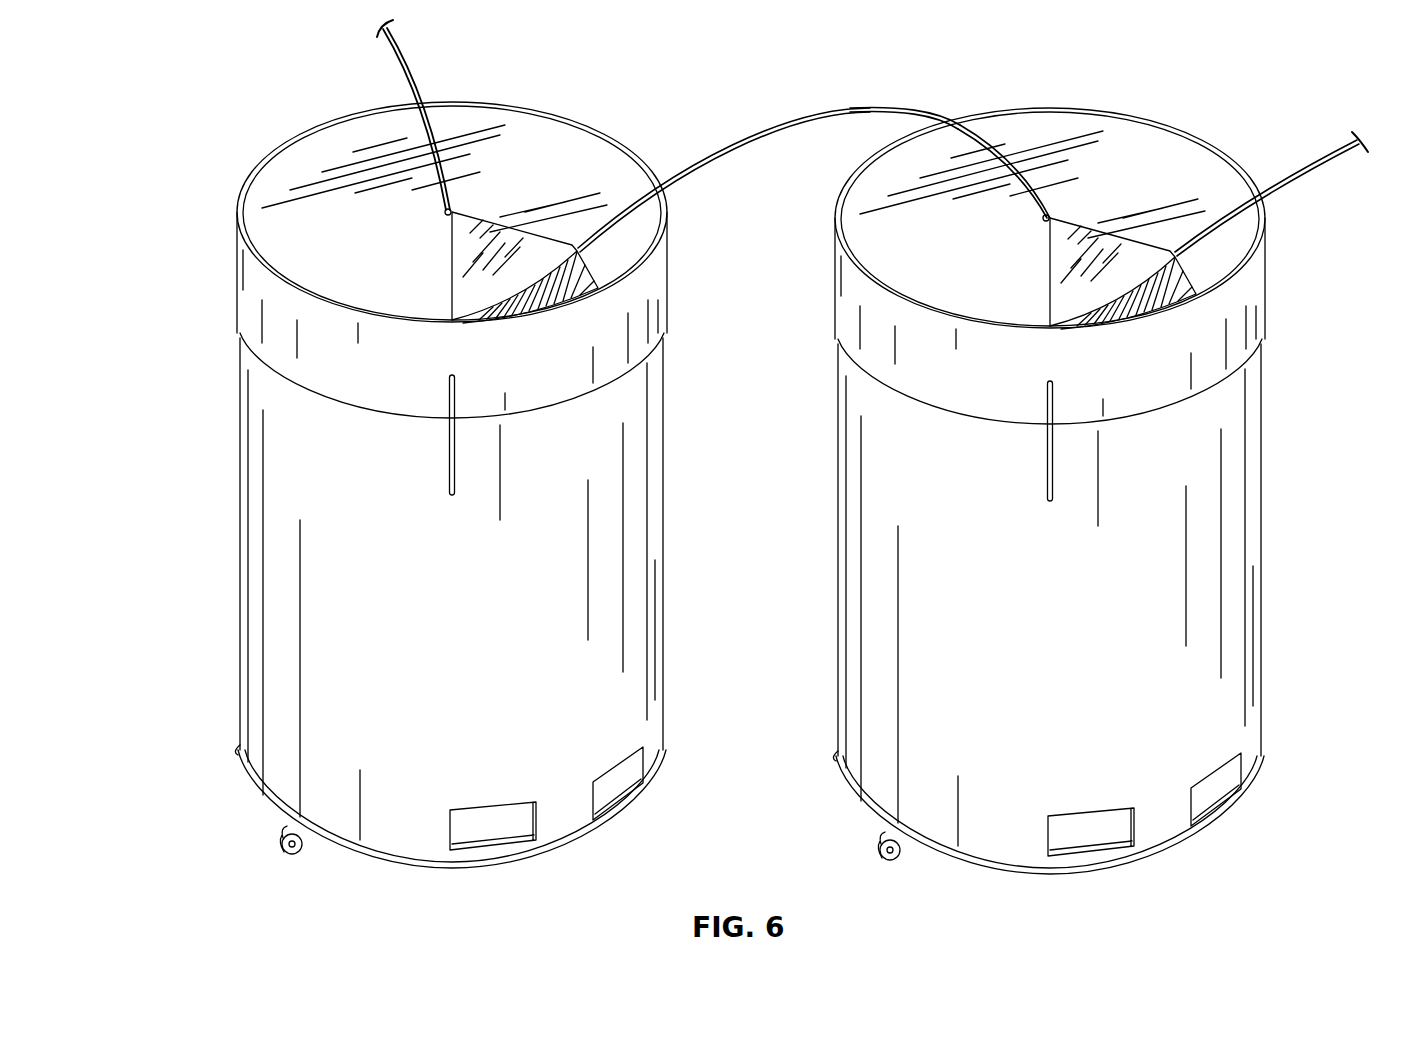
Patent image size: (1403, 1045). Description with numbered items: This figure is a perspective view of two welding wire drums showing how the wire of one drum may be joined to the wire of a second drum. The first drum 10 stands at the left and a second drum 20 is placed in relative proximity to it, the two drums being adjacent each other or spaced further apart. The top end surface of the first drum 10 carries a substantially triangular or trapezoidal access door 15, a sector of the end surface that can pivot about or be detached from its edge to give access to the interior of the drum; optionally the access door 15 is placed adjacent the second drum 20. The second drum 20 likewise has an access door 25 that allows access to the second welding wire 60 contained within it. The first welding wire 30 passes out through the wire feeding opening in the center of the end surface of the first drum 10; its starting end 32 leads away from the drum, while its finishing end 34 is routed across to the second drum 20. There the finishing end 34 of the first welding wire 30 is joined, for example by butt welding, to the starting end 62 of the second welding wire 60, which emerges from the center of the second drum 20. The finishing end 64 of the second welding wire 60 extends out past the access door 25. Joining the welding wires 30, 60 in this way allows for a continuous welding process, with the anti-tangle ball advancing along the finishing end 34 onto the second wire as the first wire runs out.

The drum 10 is at (208, 632).
The access door 15 is at (463, 303).
The second drum 20 is at (1279, 525).
The access door 25 is at (1148, 262).
The welding wire 30 is at (630, 203).
The starting end 32 is at (422, 73).
The finishing end 34 is at (832, 108).
The second welding wire 60 is at (983, 140).
The starting end 62 is at (915, 108).
The finishing end 64 is at (1300, 165).